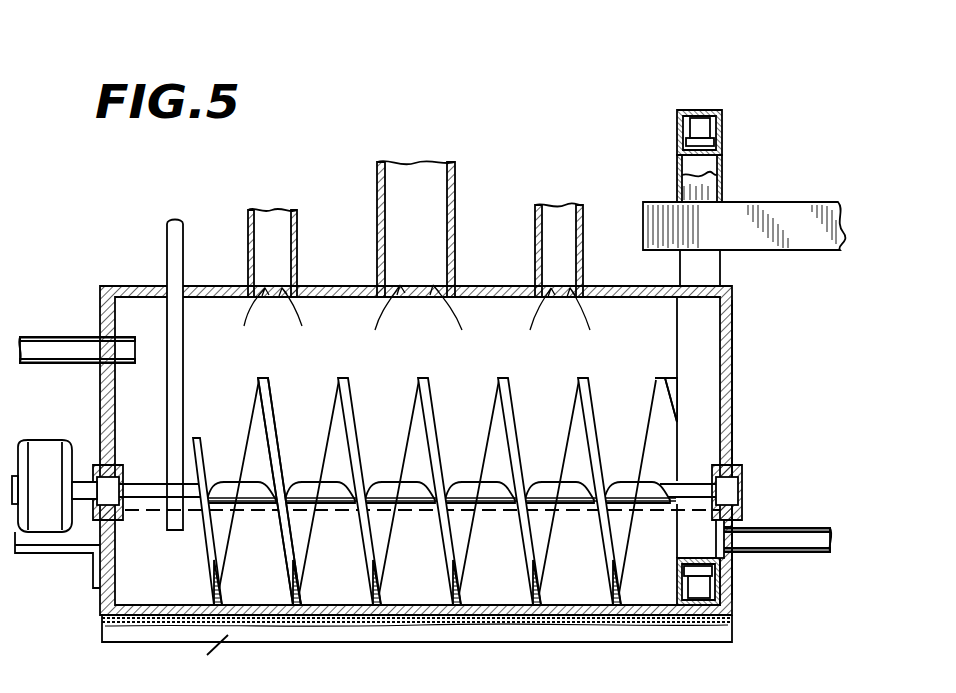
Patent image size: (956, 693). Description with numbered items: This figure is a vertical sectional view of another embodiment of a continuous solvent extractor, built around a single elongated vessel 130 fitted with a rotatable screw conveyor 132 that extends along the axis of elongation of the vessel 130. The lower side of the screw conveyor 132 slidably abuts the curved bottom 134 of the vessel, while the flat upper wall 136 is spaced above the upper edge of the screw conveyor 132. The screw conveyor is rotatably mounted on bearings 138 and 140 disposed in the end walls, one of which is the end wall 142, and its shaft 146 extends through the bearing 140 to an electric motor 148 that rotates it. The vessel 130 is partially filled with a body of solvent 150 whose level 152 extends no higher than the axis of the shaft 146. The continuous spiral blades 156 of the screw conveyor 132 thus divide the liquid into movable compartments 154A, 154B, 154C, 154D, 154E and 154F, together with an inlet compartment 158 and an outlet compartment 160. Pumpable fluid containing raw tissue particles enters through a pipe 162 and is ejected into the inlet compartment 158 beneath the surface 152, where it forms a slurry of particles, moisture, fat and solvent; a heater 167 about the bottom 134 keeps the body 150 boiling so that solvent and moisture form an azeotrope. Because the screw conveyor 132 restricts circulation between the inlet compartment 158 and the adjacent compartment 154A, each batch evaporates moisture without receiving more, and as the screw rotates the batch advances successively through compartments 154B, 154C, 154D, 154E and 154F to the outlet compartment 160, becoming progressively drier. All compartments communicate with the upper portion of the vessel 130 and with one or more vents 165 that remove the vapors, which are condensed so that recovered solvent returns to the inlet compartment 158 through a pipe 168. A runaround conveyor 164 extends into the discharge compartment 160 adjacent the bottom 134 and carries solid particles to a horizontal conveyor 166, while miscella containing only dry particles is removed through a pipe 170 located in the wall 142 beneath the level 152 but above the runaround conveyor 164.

The elongated vessel 130 is at (330, 284).
The screw conveyor 132 is at (438, 475).
The curved bottom 134 is at (601, 604).
The flat upper wall 136 is at (482, 290).
The bearing 138 is at (742, 478).
The bearing 140 is at (118, 476).
The end wall 142 is at (735, 380).
The shaft 146 is at (165, 522).
The electric motor 148 is at (58, 427).
The body of solvent 150 is at (514, 603).
The level of the solvent 152 is at (435, 514).
The compartment 154A is at (280, 588).
The compartment 154B is at (363, 588).
The compartment 154C is at (441, 588).
The compartment 154D is at (521, 582).
The compartment 154E is at (601, 582).
The compartment 154F is at (675, 588).
The blades 156 is at (343, 380).
The inlet compartment 158 is at (176, 591).
The outlet compartment 160 is at (712, 542).
The pipe 162 is at (167, 233).
The runaround conveyor 164 is at (705, 335).
The vents 165 is at (455, 176).
The horizontal conveyor 166 is at (800, 183).
The heater 167 is at (527, 636).
The pipe 168 is at (75, 320).
The pipe 170 is at (795, 528).